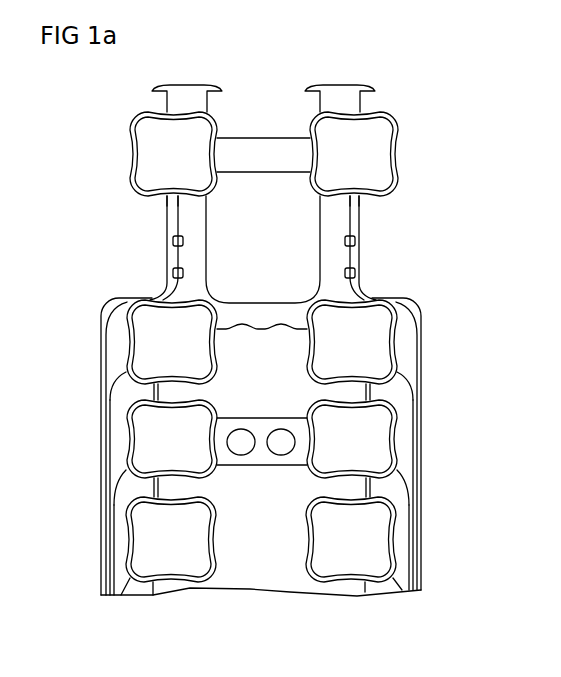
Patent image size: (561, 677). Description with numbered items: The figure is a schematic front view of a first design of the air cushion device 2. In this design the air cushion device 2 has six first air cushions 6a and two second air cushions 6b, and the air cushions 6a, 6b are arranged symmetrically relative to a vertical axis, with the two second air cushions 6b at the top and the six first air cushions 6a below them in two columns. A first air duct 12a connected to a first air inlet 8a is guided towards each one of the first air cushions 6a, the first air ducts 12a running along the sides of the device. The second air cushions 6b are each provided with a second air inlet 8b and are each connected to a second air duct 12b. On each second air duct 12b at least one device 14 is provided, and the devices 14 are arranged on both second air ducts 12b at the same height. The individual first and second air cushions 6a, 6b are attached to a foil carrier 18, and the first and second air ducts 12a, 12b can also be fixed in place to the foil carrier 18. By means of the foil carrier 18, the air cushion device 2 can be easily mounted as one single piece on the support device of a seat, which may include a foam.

The air cushion device 2 is at (403, 78).
The first air cushions 6a is at (145, 344).
The second air cushions 6b is at (148, 158).
The first air inlet 8a is at (124, 472).
The second air inlet 8b is at (176, 178).
The first air duct 12a is at (110, 392).
The second air duct 12b is at (172, 212).
The device 14 is at (173, 243).
The foil carrier 18 is at (263, 140).